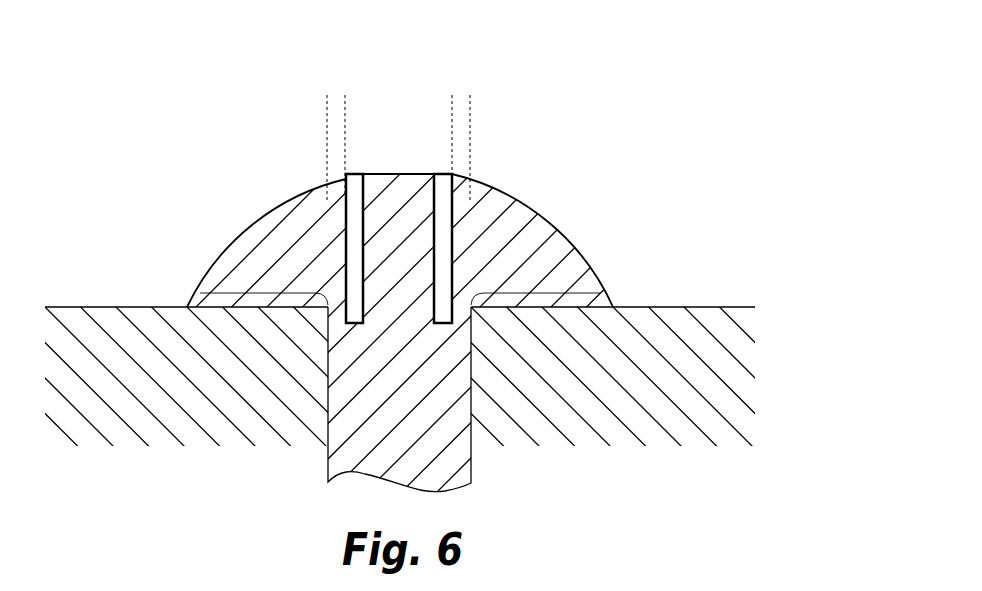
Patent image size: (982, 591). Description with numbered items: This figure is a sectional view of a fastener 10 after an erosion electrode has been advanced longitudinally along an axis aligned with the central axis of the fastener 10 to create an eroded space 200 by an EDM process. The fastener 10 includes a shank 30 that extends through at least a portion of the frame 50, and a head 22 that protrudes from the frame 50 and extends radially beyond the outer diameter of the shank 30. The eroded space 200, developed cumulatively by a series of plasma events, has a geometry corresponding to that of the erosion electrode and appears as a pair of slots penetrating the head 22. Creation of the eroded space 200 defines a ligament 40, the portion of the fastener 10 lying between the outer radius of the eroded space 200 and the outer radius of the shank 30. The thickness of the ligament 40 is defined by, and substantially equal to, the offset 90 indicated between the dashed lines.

The fastener 10 is at (242, 202).
The head 22 is at (517, 198).
The shank 30 is at (363, 474).
The ligament 40 is at (200, 293).
The frame 50 is at (756, 357).
The offset 90 is at (336, 111).
The eroded space 200 is at (438, 172).